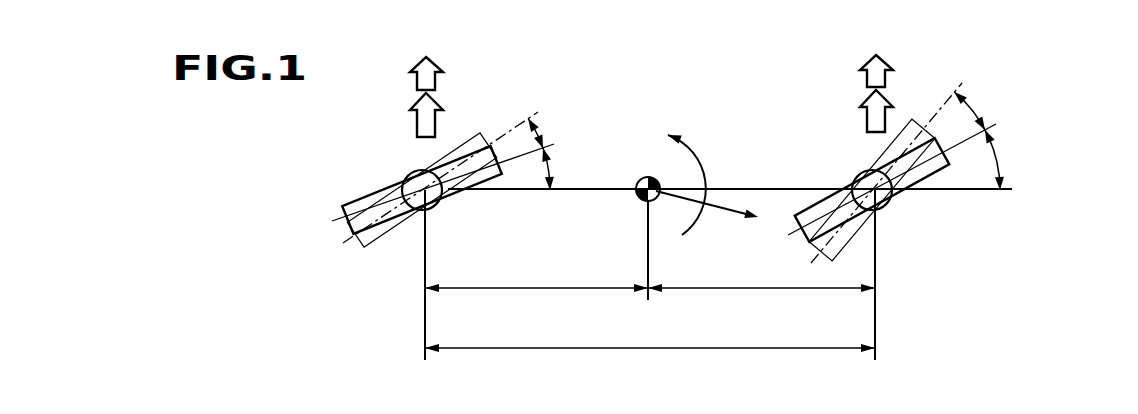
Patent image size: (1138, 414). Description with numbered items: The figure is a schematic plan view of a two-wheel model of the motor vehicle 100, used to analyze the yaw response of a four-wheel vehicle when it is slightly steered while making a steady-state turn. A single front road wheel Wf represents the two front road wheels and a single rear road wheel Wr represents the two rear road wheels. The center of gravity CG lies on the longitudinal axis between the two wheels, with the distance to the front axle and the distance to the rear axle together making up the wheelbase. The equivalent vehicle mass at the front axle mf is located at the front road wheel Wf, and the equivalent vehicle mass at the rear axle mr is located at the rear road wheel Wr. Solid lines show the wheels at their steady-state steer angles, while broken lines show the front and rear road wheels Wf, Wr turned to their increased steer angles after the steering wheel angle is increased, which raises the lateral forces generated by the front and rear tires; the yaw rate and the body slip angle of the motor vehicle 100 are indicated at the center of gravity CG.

The motor vehicle 100 is at (692, 207).
The rear road wheel Wr is at (362, 200).
The front road wheel Wf is at (924, 172).
The equivalent vehicle mass at the rear axle mr is at (437, 201).
The equivalent vehicle mass at the front axle mf is at (888, 199).
The center of gravity CG is at (648, 177).